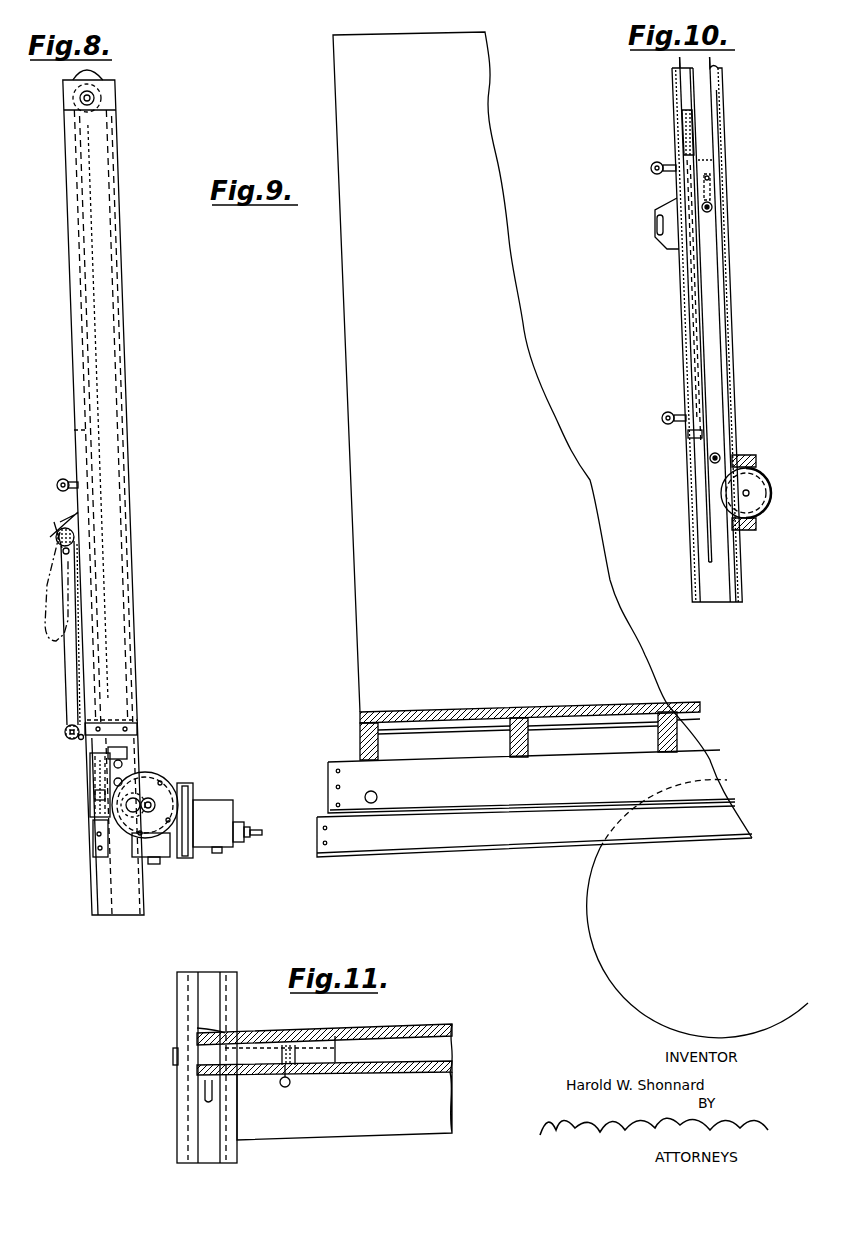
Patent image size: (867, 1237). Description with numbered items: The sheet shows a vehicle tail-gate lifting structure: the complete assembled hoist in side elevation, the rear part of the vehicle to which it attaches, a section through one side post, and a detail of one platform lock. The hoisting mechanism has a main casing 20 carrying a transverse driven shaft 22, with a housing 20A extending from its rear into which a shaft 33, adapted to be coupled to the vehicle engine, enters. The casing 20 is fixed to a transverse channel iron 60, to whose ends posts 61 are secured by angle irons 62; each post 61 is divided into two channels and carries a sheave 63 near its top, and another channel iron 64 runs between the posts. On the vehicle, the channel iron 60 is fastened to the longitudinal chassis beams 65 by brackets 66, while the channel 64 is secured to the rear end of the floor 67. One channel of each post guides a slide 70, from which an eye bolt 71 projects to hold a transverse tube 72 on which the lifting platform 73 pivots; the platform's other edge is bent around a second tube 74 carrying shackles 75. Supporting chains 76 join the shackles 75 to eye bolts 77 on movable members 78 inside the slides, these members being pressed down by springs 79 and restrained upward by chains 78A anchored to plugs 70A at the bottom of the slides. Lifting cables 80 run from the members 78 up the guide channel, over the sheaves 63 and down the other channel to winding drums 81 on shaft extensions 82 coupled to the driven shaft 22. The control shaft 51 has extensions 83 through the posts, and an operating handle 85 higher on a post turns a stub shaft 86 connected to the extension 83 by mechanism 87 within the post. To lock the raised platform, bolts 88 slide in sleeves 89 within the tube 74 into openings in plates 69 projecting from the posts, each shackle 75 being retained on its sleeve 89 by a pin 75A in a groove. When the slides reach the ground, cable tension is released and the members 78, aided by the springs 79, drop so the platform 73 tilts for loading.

In FIG. 8, the main casing 20 is at (146, 772).
In FIG. 8, the housing 20A is at (208, 800).
In FIG. 8, the transverse driven shaft 22 is at (148, 808).
In FIG. 8, the shaft 33 is at (253, 826).
In FIG. 8, the control shaft 51 is at (122, 760).
In FIG. 8, the transverse channel iron 60 is at (92, 777).
In FIG. 8, the post 61 is at (72, 310).
In FIG. 10, the post 61 is at (730, 300).
In FIG. 8, the angle iron 62 is at (93, 797).
In FIG. 8, the sheave 63 is at (70, 98).
In FIG. 8, the channel iron 64 is at (118, 720).
In FIG. 9, the longitudinal beam 65 is at (386, 840).
In FIG. 8, the bracket 66 is at (93, 835).
In FIG. 9, the floor 67 is at (522, 712).
In FIG. 8, the plate 69 is at (56, 514).
In FIG. 10, the plate 69 is at (668, 206).
In FIG. 11, the plate 69 is at (178, 1085).
In FIG. 8, the slide 70 is at (80, 440).
In FIG. 10, the slide 70 is at (692, 290).
In FIG. 10, the plug 70A is at (690, 440).
In FIG. 8, the eye bolt 71 is at (80, 740).
In FIG. 10, the eye bolt 71 is at (671, 411).
In FIG. 8, the transverse tube 72 is at (66, 726).
In FIG. 8, the lifting platform 73 is at (76, 657).
In FIG. 11, the lifting platform 73 is at (440, 1098).
In FIG. 8, the transverse tube 74 is at (58, 546).
In FIG. 11, the transverse tube 74 is at (407, 1072).
In FIG. 8, the shackle 75 is at (63, 556).
In FIG. 11, the shackle 75 is at (204, 1097).
In FIG. 11, the pin 75A is at (197, 1028).
In FIG. 8, the supporting chain 76 is at (46, 612).
In FIG. 8, the eye bolt 77 is at (62, 479).
In FIG. 10, the eye bolt 77 is at (653, 163).
In FIG. 10, the movable member 78 is at (698, 168).
In FIG. 10, the chain 78A is at (682, 345).
In FIG. 10, the spring 79 is at (680, 134).
In FIG. 8, the lifting cable 80 is at (74, 236).
In FIG. 10, the lifting cable 80 is at (683, 88).
In FIG. 8, the winding drum 81 is at (158, 784).
In FIG. 10, the winding drum 81 is at (752, 478).
In FIG. 10, the shaft extension 82 is at (748, 495).
In FIG. 10, the control shaft extension 83 is at (709, 462).
In FIG. 10, the operating handle 85 is at (712, 190).
In FIG. 10, the stub shaft 86 is at (712, 208).
In FIG. 10, the mechanism 87 is at (712, 367).
In FIG. 11, the bolt 88 is at (265, 1048).
In FIG. 11, the sleeve 89 is at (320, 1070).